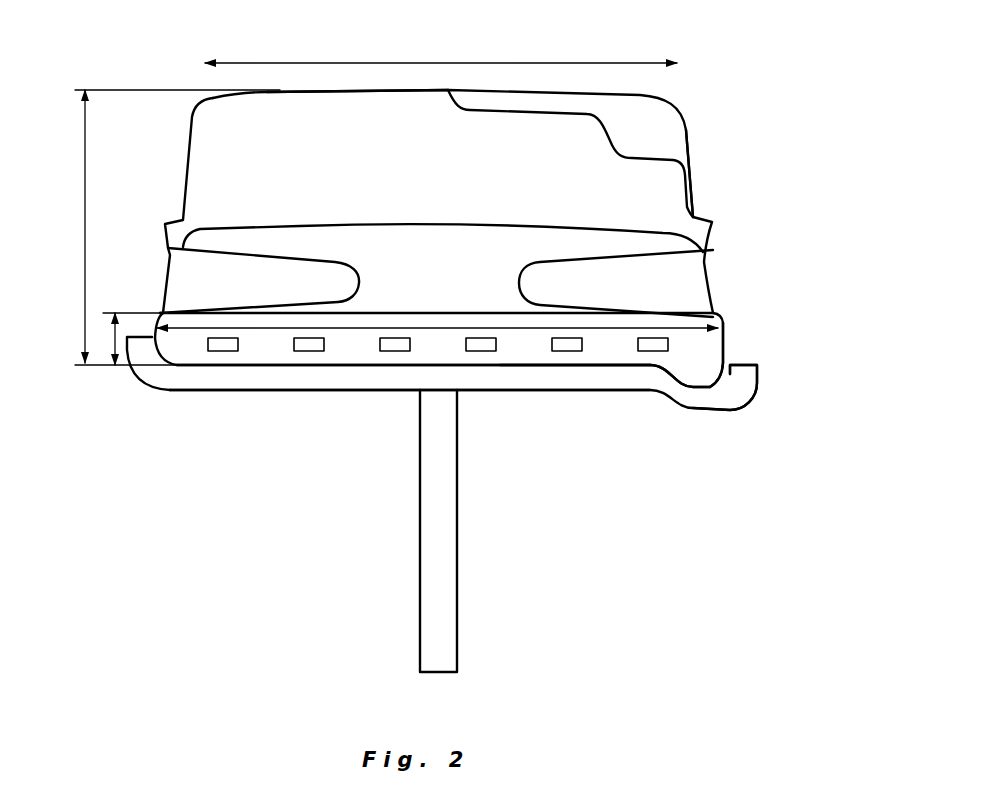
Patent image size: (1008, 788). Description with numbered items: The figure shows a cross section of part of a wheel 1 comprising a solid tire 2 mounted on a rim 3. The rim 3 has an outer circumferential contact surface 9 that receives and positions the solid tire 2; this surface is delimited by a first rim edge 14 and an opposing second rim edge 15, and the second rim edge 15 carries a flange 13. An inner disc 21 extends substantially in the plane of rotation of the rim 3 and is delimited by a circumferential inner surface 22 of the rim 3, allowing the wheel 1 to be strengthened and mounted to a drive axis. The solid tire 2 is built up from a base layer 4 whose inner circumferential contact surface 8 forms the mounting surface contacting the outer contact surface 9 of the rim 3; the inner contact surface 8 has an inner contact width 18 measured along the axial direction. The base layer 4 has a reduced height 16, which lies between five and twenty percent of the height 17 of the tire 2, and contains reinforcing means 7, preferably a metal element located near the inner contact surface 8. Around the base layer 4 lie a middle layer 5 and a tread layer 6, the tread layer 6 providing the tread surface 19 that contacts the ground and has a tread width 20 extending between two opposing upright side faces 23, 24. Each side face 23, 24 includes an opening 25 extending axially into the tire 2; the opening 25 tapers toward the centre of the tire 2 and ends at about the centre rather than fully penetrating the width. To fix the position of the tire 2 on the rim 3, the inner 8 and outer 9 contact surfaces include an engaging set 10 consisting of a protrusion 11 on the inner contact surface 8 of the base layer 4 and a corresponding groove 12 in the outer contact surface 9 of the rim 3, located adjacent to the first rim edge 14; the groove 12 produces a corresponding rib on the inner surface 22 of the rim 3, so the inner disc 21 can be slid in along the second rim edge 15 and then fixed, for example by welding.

The wheel 1 is at (737, 108).
The solid tire 2 is at (808, 247).
The rim 3 is at (540, 420).
The base layer 4 is at (715, 342).
The middle layer 5 is at (647, 247).
The tread layer 6 is at (655, 205).
The reinforcing means 7 is at (308, 345).
The inner circumferential contact surface 8 is at (633, 365).
The outer circumferential contact surface 9 is at (592, 365).
The engaging set 10 is at (772, 383).
The protrusion 11 is at (715, 365).
The groove 12 is at (727, 378).
The flange 13 is at (146, 350).
The first rim edge 14 is at (732, 376).
The second rim edge 15 is at (152, 337).
The height of the base layer 16 is at (113, 358).
The height of the tire 17 is at (85, 247).
The inner contact width 18 is at (442, 328).
The tread surface 19 is at (383, 90).
The tread width 20 is at (435, 63).
The inner disc 21 is at (441, 472).
The circumferential inner surface 22 is at (570, 390).
The upright side face 23 is at (688, 150).
The upright side face 24 is at (188, 155).
The opening 25 is at (630, 268).